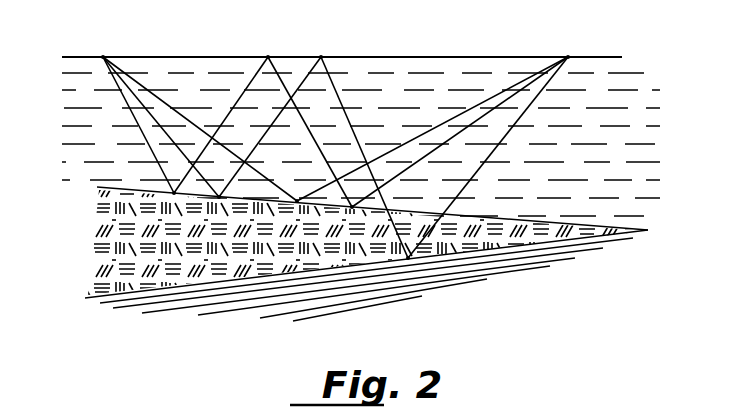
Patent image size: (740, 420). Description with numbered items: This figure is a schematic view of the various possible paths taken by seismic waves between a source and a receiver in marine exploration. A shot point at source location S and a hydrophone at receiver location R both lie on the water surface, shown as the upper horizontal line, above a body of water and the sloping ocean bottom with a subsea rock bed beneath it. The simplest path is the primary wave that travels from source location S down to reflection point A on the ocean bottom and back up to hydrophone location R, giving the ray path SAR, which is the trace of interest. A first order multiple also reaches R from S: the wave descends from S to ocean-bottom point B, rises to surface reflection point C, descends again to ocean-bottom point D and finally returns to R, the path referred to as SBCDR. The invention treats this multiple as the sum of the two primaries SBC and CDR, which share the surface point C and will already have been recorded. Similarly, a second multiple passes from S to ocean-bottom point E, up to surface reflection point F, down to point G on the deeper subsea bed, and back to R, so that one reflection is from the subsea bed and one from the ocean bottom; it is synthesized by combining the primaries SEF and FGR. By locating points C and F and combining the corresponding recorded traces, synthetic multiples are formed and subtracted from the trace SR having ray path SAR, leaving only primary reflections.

The source location S is at (197, 116).
The surface reflection point C is at (263, 119).
The surface reflection point F is at (313, 144).
The hydrophone location R is at (436, 144).
The ocean-bottom reflection point B is at (173, 205).
The ocean-bottom reflection point E is at (219, 208).
The ocean-bottom reflection point A is at (296, 212).
The ocean-bottom reflection point D is at (352, 217).
The subsea-bed reflection point G is at (408, 272).